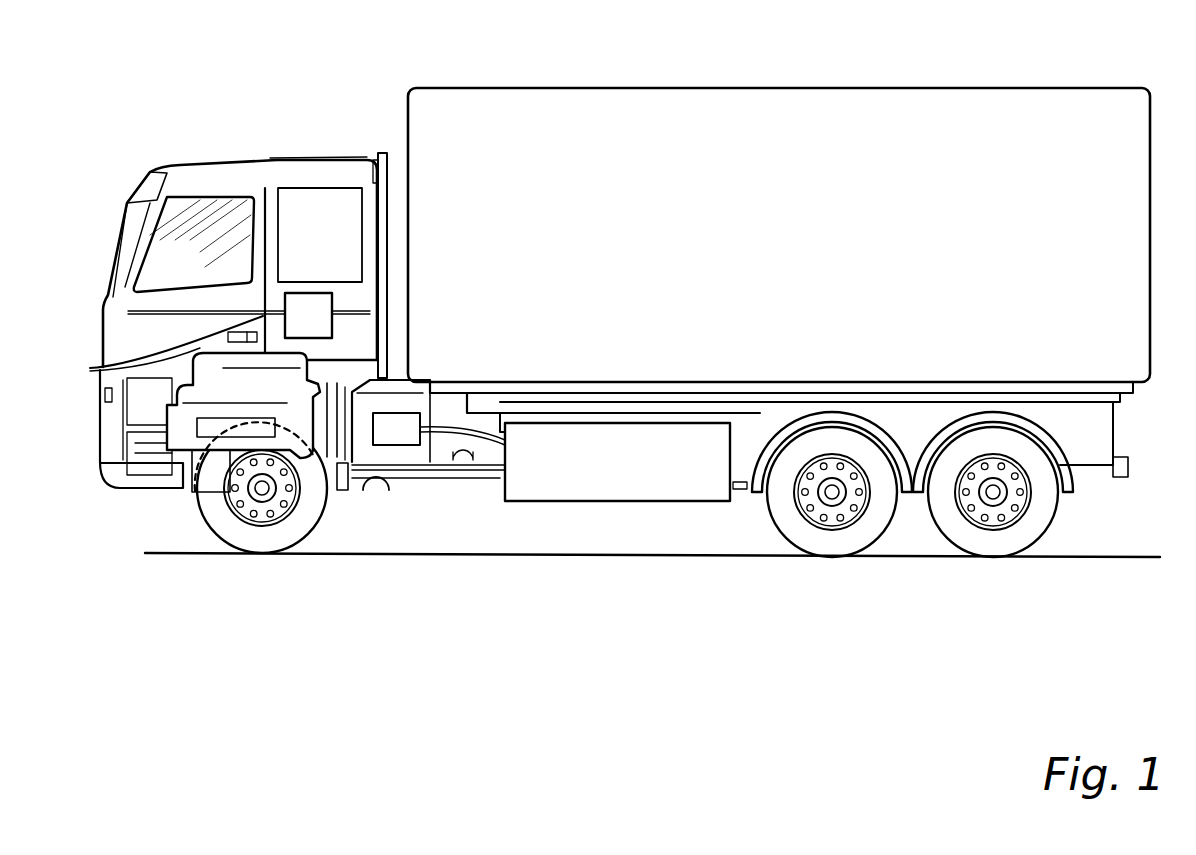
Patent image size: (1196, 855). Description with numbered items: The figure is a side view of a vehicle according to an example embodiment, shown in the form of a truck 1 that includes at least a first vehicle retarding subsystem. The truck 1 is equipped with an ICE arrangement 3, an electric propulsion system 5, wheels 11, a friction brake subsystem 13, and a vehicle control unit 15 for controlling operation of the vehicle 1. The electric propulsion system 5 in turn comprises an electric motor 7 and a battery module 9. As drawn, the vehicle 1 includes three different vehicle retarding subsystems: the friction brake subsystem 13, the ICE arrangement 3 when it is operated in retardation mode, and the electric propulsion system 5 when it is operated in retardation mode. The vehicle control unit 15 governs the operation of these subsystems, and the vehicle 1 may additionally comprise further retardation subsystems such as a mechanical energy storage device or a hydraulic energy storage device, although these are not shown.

The truck 1 is at (355, 104).
The ICE arrangement 3 is at (194, 428).
The electric propulsion system 5 is at (363, 491).
The electric motor 7 is at (405, 437).
The battery module 9 is at (612, 472).
The wheels 11 is at (827, 560).
The friction brake subsystem 13 is at (805, 512).
The vehicle control unit 15 is at (285, 337).